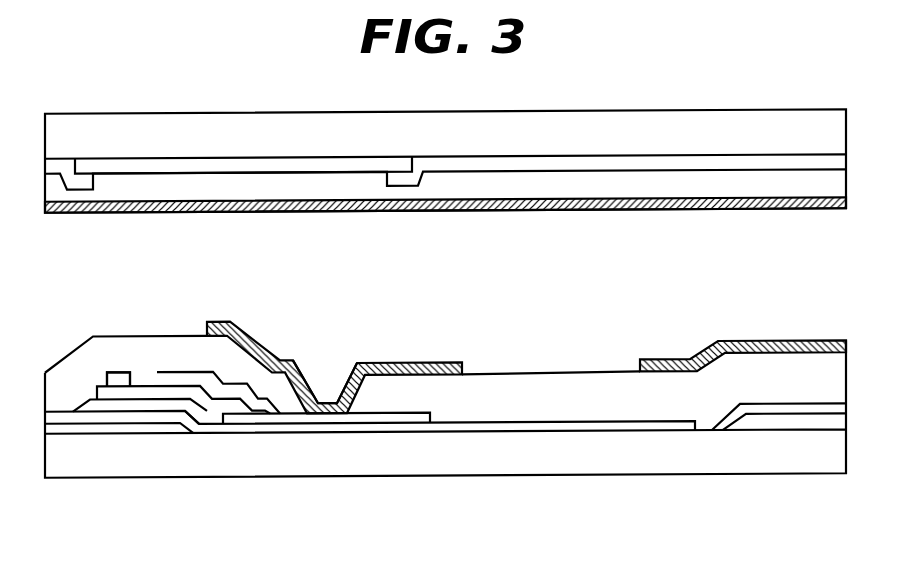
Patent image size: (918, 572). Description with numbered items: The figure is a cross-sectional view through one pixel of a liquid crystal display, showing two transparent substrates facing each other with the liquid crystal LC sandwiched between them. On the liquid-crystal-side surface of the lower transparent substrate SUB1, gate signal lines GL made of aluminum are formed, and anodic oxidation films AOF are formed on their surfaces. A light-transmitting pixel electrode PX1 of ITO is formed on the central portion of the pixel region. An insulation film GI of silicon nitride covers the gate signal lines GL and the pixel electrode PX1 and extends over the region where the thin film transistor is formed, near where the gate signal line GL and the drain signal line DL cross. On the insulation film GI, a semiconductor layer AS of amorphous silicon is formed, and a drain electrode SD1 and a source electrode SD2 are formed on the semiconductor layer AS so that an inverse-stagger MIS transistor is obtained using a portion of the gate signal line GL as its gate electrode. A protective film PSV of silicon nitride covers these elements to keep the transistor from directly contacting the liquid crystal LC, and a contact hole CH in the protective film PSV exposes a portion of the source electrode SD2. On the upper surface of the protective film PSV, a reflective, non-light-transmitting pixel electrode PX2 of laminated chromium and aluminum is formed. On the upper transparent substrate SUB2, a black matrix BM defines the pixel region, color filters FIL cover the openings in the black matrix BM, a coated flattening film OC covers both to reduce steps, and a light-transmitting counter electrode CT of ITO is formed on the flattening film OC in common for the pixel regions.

The transparent substrate SUB2 is at (730, 119).
The color filter FIL is at (622, 165).
The black matrix BM is at (180, 165).
The flattening film OC is at (263, 190).
The counter electrode CT is at (663, 202).
The transparent substrate SUB1 is at (540, 460).
The gate signal line GL is at (108, 428).
The insulation film GI is at (102, 410).
The anodic oxidation film AOF is at (190, 430).
The semiconductor layer AS is at (146, 392).
The drain electrode SD1 is at (120, 373).
The drain signal line DL is at (118, 379).
The source electrode SD2 is at (213, 383).
The pixel electrode PX1 is at (313, 428).
The protective film PSV is at (92, 368).
The pixel electrode PX2 is at (437, 365).
The contact hole CH is at (324, 384).
The liquid crystal LC is at (617, 271).